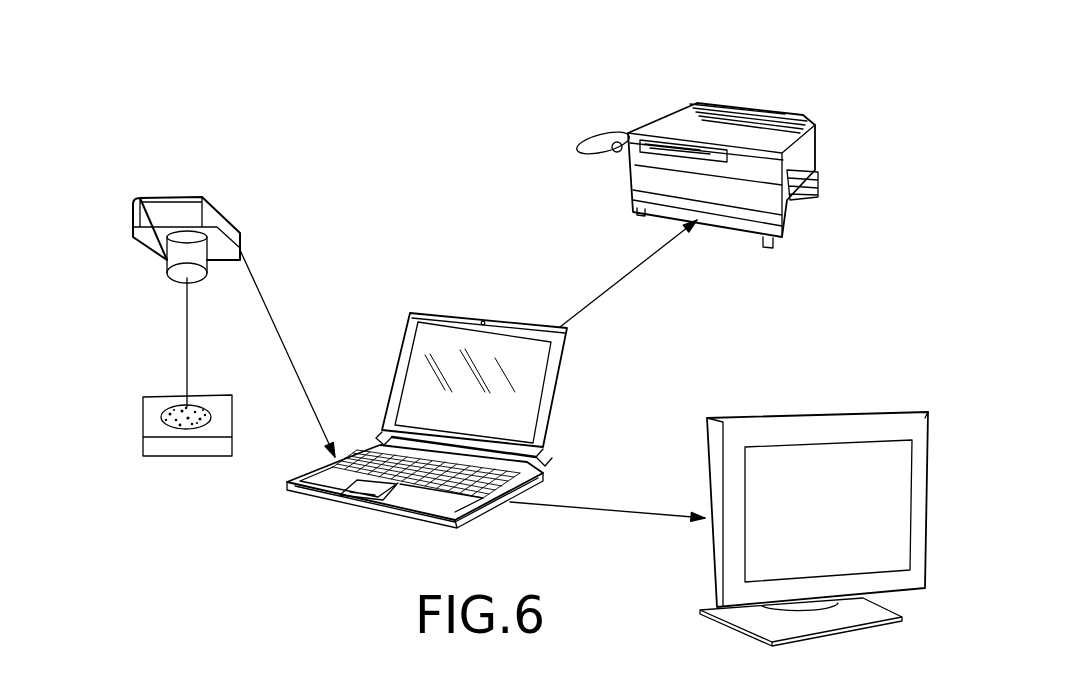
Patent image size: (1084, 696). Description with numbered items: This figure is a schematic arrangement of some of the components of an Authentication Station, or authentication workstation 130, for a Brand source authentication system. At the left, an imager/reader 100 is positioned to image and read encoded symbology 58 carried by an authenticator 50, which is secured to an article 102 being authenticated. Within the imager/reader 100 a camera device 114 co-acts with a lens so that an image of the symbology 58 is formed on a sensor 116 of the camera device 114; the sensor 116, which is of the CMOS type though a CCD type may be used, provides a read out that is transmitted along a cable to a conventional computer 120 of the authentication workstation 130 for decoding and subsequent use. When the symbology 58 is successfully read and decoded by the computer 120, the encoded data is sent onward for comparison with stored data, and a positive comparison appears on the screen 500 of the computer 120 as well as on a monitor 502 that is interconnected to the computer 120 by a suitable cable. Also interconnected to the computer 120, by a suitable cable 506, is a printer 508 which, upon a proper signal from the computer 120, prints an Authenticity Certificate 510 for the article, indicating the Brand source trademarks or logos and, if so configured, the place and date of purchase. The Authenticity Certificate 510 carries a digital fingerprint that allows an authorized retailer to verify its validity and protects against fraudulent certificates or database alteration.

The authenticator 50 is at (165, 431).
The encoded symbology 58 is at (183, 408).
The imager/reader 100 is at (214, 190).
The article 102 is at (218, 430).
The camera device 114 is at (183, 277).
The sensor 116 is at (275, 317).
The computer 120 is at (501, 290).
The authentication workstation 130 is at (441, 130).
The screen 500 is at (447, 352).
The monitor 502 is at (865, 468).
The cable 506 is at (610, 287).
The printer 508 is at (798, 214).
The Authenticity Certificate 510 is at (618, 143).